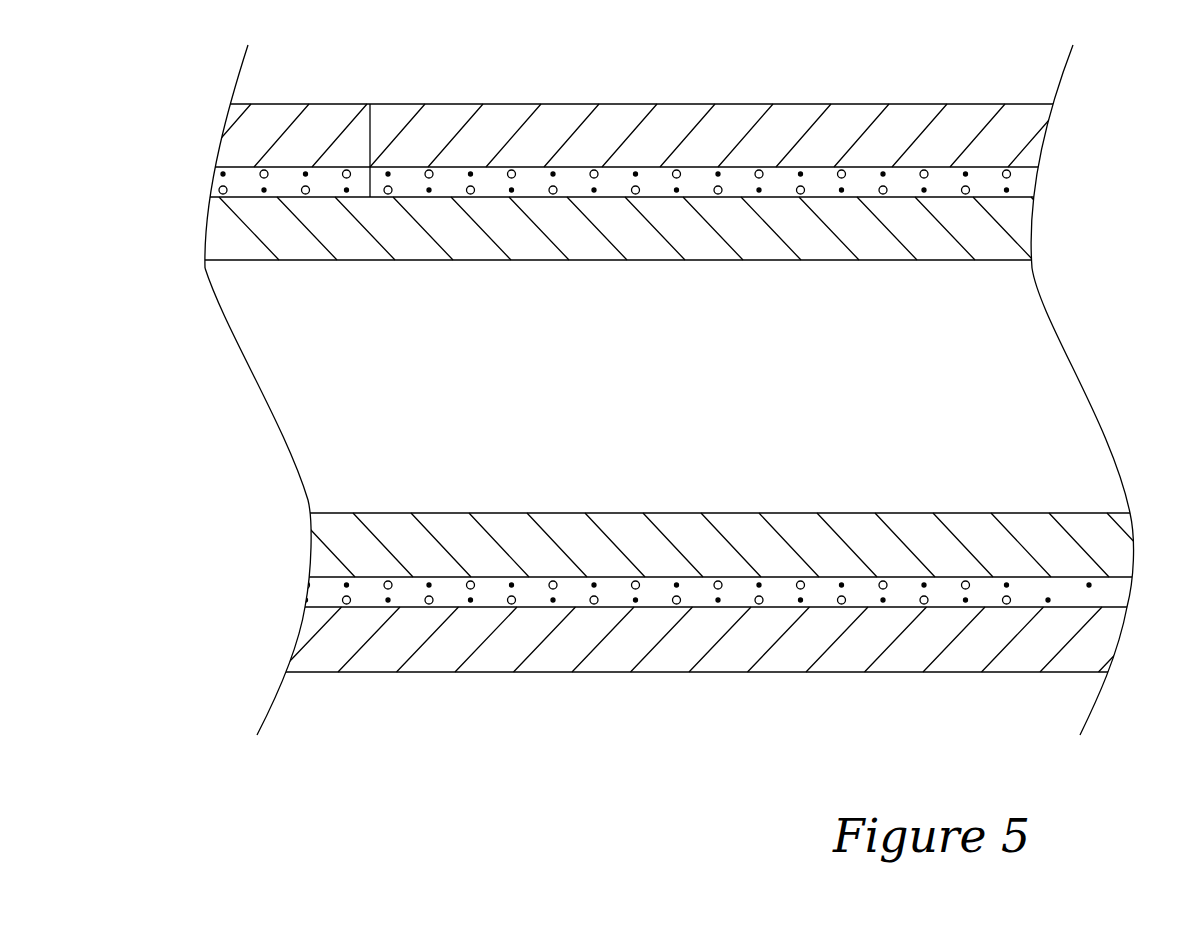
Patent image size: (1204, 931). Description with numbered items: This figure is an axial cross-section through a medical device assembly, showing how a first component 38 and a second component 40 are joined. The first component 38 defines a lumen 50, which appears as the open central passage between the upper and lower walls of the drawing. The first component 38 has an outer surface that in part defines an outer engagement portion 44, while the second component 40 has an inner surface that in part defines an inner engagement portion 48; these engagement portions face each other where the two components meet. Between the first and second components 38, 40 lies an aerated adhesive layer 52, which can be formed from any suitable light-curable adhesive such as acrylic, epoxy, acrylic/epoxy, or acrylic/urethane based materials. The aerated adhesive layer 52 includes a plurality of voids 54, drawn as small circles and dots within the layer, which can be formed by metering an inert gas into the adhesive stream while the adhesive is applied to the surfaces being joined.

The first component 38 is at (295, 237).
The second component 40 is at (615, 110).
The outer engagement portion 44 is at (370, 104).
The inner engagement portion 48 is at (698, 176).
The lumen 50 is at (1020, 372).
The aerated adhesive layer 52 is at (902, 180).
The voids 54 is at (436, 172).